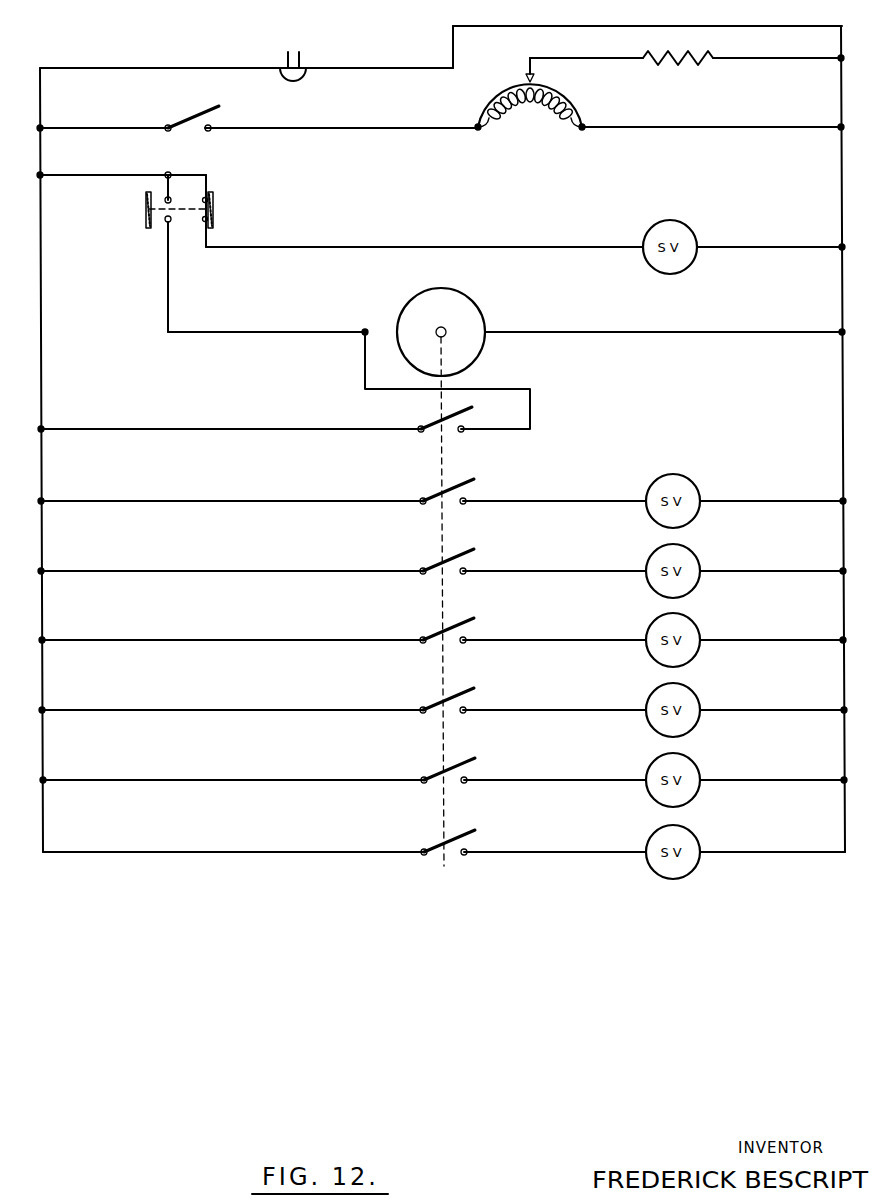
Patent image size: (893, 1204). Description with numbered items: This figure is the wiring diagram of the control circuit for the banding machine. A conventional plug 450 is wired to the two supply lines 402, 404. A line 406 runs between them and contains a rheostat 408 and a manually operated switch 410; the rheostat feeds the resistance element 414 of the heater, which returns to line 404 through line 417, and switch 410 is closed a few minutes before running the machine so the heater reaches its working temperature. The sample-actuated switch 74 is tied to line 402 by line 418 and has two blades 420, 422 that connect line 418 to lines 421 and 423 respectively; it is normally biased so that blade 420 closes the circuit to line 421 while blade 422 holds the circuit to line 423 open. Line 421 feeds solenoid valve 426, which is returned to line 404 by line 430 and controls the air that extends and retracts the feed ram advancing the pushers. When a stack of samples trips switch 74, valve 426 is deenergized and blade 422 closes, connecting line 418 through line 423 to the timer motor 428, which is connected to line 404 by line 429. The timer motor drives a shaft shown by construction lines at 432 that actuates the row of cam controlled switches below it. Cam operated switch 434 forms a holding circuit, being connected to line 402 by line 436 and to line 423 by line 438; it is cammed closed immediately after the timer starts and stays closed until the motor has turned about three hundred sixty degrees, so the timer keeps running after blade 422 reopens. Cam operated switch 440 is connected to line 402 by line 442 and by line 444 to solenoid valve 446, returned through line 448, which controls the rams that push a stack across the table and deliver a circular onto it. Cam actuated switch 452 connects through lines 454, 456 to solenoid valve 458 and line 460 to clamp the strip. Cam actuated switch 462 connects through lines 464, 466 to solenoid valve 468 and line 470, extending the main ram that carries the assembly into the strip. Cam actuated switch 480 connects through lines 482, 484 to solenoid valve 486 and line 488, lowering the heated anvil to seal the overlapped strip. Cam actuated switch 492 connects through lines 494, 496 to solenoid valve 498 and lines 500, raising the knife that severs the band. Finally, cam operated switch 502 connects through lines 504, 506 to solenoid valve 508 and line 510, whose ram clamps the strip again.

The line 402 is at (119, 68).
The line 404 is at (369, 68).
The plug 450 is at (317, 42).
The line 406 is at (697, 128).
The rheostat 408 is at (586, 103).
The manually operated switch 410 is at (199, 114).
The resistance element 414 is at (689, 64).
The line 417 is at (748, 58).
The line 418 is at (99, 175).
The switch 74 is at (225, 171).
The blade 420 is at (215, 216).
The blade 422 is at (146, 216).
The line 421 is at (334, 247).
The line 423 is at (170, 310).
The solenoid valve 426 is at (688, 229).
The timer motor 428 is at (484, 314).
The line 429 is at (748, 247).
The line 430 is at (662, 332).
The shaft 432 is at (447, 456).
The cam operated switch 434 is at (432, 420).
The line 436 is at (229, 429).
The line 438 is at (508, 389).
The cam operated switch 440 is at (434, 492).
The line 442 is at (232, 501).
The line 444 is at (551, 501).
The solenoid valve 446 is at (693, 482).
The line 448 is at (764, 501).
The cam actuated switch 452 is at (434, 562).
The line 454 is at (232, 571).
The line 456 is at (551, 571).
The solenoid valve 458 is at (693, 552).
The line 460 is at (764, 571).
The cam actuated switch 462 is at (434, 631).
The line 464 is at (232, 640).
The line 466 is at (551, 640).
The solenoid valve 468 is at (693, 621).
The line 470 is at (764, 640).
The cam actuated switch 480 is at (434, 701).
The lines 482 is at (232, 710).
The lines 484 is at (551, 710).
The solenoid valve 486 is at (693, 691).
The line 488 is at (764, 710).
The cam actuated switch 492 is at (435, 771).
The line 494 is at (232, 780).
The line 496 is at (551, 780).
The solenoid valve 498 is at (693, 761).
The lines 500 is at (764, 780).
The cam operated switch 502 is at (435, 843).
The line 504 is at (232, 852).
The line 506 is at (551, 852).
The solenoid valve 508 is at (693, 833).
The line 510 is at (764, 852).